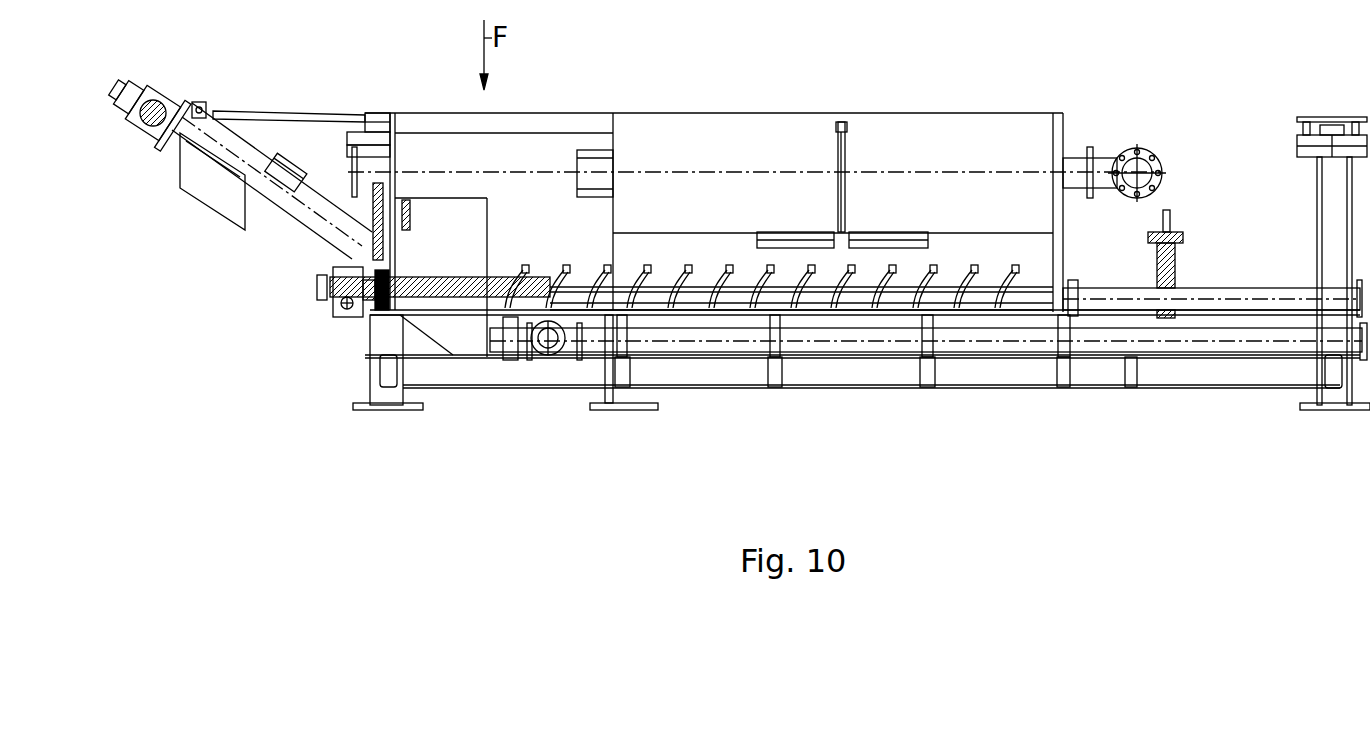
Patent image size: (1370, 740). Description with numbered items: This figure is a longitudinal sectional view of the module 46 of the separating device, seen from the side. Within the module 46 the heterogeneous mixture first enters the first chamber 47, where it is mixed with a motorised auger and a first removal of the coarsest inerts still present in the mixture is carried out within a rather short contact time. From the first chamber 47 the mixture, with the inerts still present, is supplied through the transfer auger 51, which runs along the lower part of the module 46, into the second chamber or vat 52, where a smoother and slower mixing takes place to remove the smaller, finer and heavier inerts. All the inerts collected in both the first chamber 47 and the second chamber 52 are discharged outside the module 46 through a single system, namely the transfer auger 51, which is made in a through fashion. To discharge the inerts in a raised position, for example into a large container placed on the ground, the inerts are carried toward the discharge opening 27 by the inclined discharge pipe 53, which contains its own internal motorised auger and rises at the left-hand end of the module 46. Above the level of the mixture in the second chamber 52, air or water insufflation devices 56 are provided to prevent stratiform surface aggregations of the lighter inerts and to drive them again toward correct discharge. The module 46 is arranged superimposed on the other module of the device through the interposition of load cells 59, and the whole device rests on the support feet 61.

The discharge opening 27 is at (216, 192).
The inclined discharge pipe 53 is at (330, 233).
The first chamber 47 is at (528, 186).
The second chamber or vat 52 is at (750, 143).
The module 46 is at (1002, 84).
The transfer auger 51 is at (726, 272).
The air or water insufflation devices 56 is at (764, 240).
The load cells 59 is at (1357, 106).
The support feet 61 is at (378, 412).